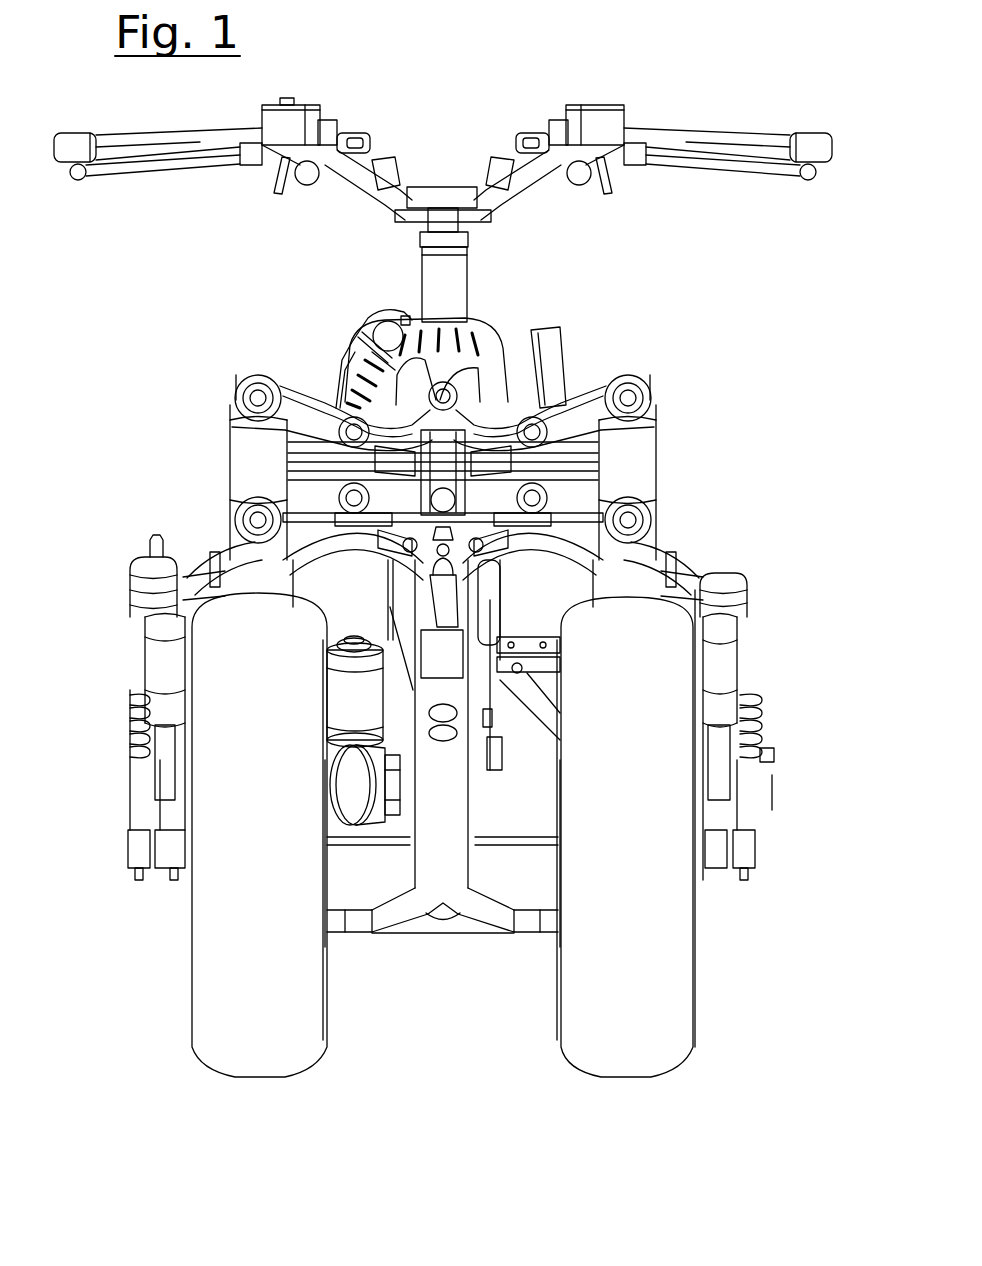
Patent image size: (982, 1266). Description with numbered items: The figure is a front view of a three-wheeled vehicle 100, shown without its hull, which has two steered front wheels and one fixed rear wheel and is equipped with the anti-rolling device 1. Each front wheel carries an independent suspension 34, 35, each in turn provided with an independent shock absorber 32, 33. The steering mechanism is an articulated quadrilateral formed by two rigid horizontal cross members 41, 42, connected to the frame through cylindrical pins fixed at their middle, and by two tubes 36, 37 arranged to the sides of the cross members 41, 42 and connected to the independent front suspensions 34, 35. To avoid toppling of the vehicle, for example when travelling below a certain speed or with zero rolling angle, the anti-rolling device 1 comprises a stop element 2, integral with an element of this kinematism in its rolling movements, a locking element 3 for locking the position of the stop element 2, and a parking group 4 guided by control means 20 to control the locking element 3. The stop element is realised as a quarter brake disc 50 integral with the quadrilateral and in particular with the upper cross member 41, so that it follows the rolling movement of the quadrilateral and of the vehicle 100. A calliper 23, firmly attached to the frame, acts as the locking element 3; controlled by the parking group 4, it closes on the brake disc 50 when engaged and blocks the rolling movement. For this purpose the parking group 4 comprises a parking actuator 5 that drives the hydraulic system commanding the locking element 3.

The vehicle 100 is at (150, 318).
The control means 20 is at (443, 134).
The anti-rolling device 1 is at (346, 318).
The stop element 2 is at (347, 352).
The locking element 3 is at (372, 322).
The calliper 23 is at (385, 302).
The brake disc 50 is at (480, 333).
The upper cross member 41 is at (306, 412).
The tube 36 is at (252, 468).
The tube 37 is at (640, 460).
The cross member 42 is at (592, 499).
The independent suspension 35 is at (160, 672).
The independent suspension 34 is at (725, 673).
The shock absorber 32 is at (765, 726).
The shock absorber 33 is at (137, 785).
The parking actuator 5 is at (348, 687).
The parking group 4 is at (368, 825).